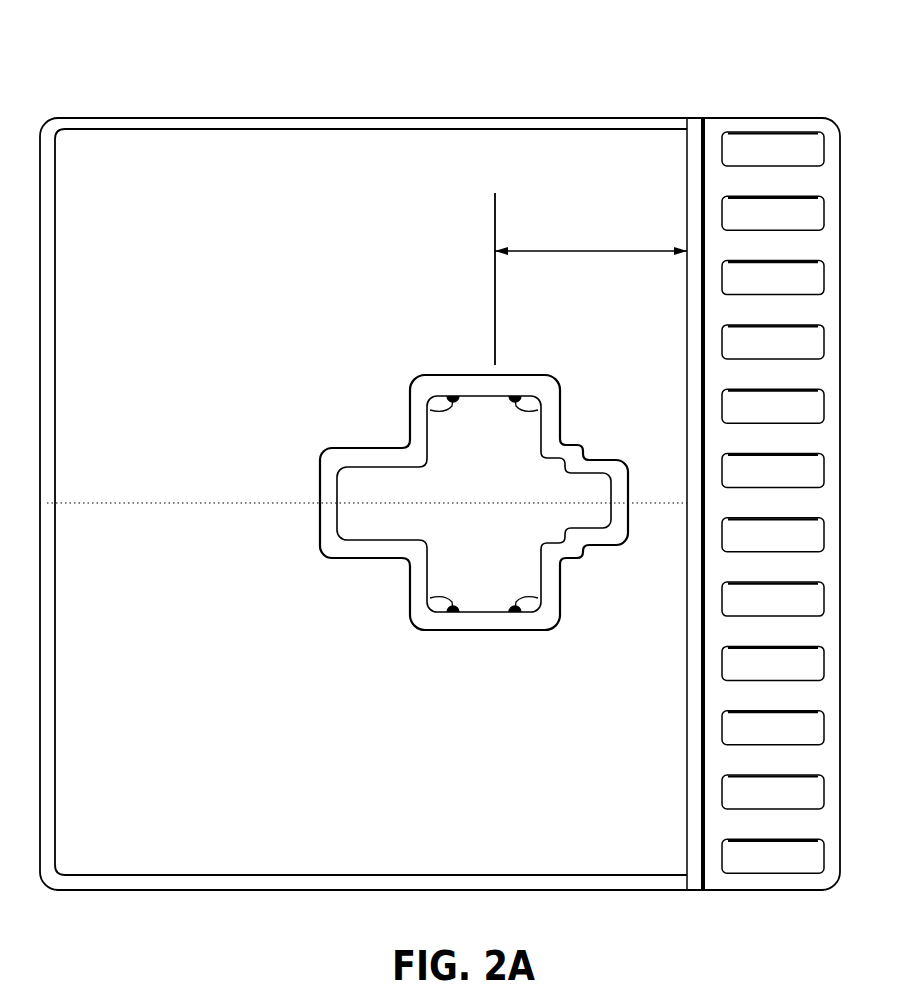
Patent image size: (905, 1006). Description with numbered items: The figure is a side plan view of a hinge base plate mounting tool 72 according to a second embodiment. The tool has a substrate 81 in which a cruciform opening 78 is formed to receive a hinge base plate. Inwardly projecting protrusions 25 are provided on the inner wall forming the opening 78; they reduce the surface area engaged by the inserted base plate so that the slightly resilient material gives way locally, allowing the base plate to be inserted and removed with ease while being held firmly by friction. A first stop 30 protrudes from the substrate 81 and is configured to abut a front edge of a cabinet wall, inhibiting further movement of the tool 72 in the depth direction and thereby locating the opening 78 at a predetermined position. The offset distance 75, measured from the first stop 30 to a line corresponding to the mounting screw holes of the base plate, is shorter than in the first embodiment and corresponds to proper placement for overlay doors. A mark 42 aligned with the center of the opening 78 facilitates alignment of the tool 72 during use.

The hinge base plate mounting tool 72 is at (494, 102).
The first stop 30 is at (692, 140).
The substrate 81 is at (148, 210).
The offset distance 75 is at (608, 252).
The opening 78 is at (383, 378).
The protrusions 25 is at (430, 410).
The mark 42 is at (98, 505).